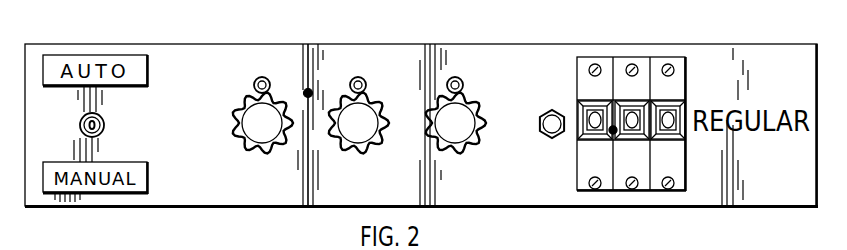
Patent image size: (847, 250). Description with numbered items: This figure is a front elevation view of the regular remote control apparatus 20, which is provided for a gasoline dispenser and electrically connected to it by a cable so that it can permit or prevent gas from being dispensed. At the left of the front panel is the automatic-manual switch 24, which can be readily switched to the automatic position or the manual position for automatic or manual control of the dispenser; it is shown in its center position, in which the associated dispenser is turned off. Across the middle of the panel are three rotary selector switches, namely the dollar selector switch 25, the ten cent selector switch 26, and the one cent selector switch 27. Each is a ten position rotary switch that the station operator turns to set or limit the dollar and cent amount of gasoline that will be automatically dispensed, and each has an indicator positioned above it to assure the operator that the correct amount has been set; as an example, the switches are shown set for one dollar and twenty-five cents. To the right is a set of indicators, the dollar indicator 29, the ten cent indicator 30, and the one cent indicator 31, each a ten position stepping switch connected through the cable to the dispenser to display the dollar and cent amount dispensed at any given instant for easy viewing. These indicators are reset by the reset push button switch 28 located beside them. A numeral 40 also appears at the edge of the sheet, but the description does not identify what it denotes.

The remote control apparatus 20 is at (271, 43).
The automatic-manual switch 24 is at (101, 116).
The dollar selector switch 25 is at (265, 133).
The ten cent selector switch 26 is at (356, 133).
The one cent selector switch 27 is at (461, 133).
The reset push button switch 28 is at (552, 139).
The dollar indicator 29 is at (601, 140).
The ten cent indicator 30 is at (636, 140).
The one cent indicator 31 is at (672, 140).
The circuit element 40 is at (740, 246).